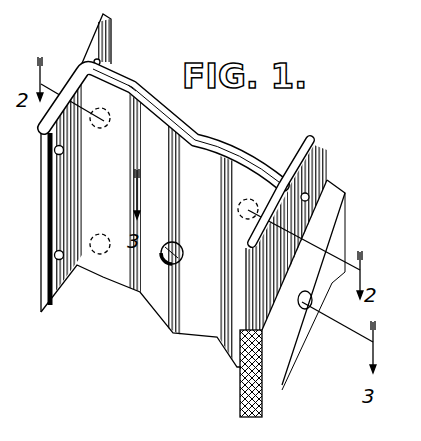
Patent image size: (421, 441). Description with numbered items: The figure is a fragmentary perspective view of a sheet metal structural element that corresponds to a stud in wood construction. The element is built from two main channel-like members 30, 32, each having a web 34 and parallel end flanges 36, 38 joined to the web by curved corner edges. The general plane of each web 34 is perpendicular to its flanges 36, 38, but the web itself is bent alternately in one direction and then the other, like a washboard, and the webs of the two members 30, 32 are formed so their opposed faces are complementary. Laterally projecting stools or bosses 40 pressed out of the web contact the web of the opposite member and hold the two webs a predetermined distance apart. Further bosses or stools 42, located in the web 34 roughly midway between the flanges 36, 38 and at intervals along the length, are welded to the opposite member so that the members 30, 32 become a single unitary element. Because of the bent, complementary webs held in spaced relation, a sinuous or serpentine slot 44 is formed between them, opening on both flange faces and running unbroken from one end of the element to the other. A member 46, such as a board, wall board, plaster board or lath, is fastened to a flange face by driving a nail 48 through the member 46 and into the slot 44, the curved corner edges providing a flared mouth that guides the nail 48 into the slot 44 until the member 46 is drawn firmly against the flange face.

The channel-like member 30 is at (214, 128).
The channel-like member 32 is at (198, 168).
The web 34 is at (175, 116).
The end flange 36 is at (98, 27).
The end flange 38 is at (303, 152).
The stools or bosses 40 is at (102, 130).
The bosses or stools 42 is at (179, 266).
The sinuous slot 44 is at (247, 158).
The member 46 is at (341, 204).
The nail 48 is at (306, 310).